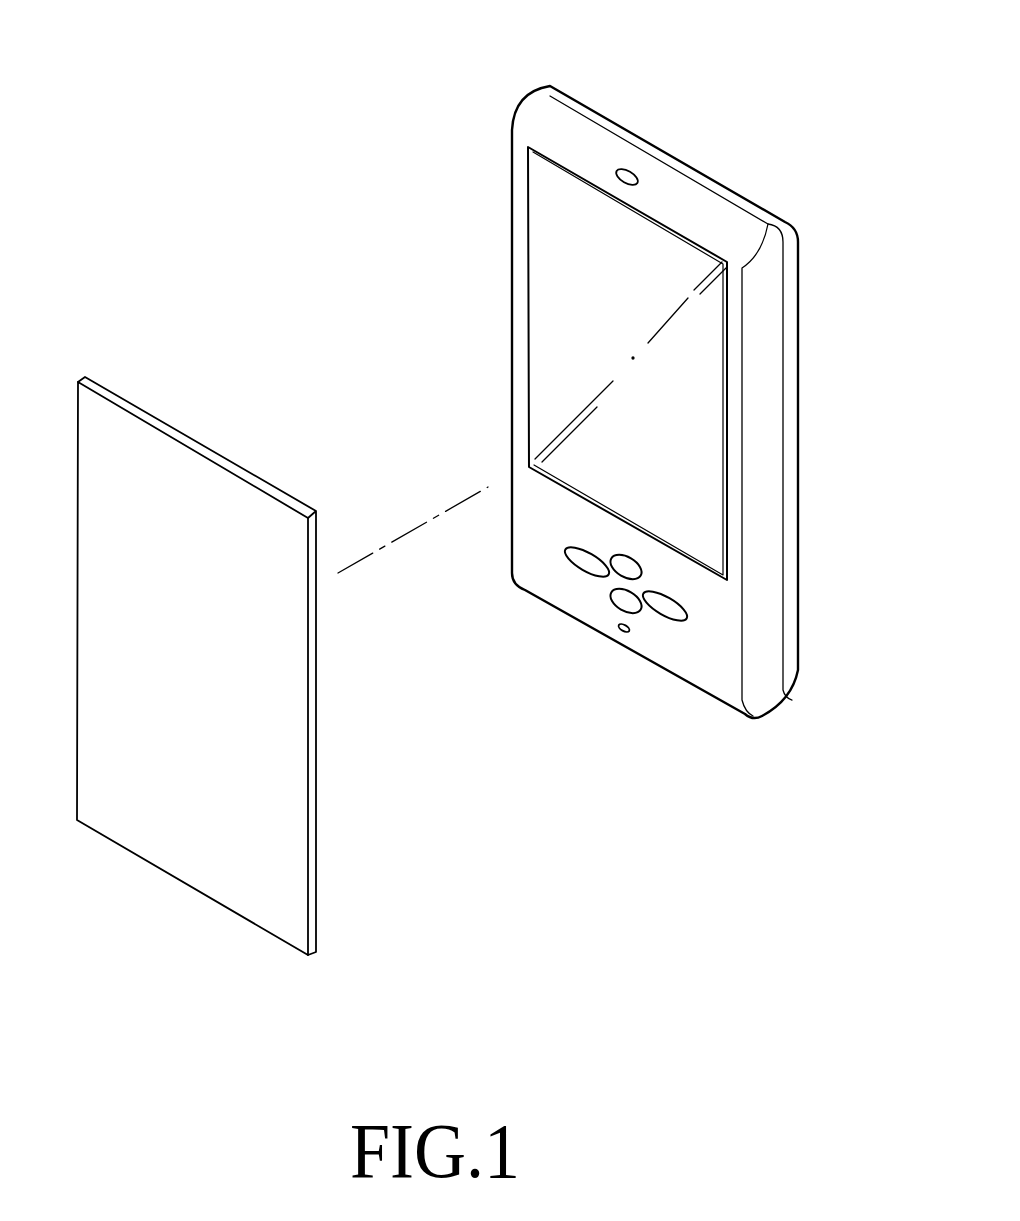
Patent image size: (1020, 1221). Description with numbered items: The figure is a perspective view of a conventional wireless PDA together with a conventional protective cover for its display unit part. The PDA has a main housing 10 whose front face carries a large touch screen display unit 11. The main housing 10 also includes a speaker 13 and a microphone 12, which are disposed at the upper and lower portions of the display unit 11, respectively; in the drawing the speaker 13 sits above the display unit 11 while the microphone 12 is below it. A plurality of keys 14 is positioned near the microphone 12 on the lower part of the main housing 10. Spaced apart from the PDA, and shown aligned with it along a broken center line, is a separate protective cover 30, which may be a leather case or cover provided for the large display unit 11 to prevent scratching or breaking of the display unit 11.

The main housing 10 is at (638, 366).
The touch screen display unit 11 is at (548, 308).
The microphone 12 is at (619, 634).
The speaker 13 is at (628, 170).
The keys 14 is at (580, 562).
The protective cover 30 is at (177, 850).